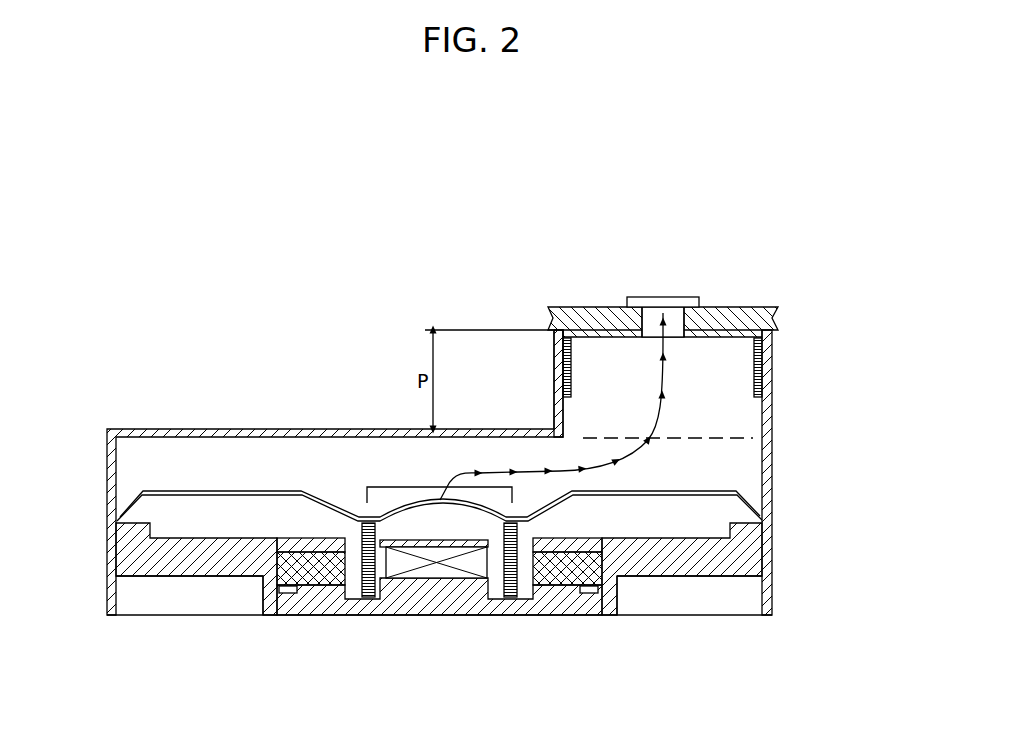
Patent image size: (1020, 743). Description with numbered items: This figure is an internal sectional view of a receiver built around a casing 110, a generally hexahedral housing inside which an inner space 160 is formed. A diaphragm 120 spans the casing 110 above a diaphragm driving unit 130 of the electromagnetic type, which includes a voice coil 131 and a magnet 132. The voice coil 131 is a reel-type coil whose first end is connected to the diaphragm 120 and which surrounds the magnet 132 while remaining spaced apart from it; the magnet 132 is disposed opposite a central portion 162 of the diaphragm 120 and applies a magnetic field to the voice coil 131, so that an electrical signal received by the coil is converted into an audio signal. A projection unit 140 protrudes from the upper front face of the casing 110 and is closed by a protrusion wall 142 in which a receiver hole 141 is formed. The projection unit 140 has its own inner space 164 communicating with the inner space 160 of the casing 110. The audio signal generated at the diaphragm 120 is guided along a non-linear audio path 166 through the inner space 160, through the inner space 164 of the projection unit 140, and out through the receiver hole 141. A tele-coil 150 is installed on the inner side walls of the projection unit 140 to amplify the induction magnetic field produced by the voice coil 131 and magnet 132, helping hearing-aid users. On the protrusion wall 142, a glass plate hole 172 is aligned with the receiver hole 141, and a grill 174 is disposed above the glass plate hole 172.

The casing 110 is at (233, 430).
The diaphragm 120 is at (660, 500).
The diaphragm driving unit 130 is at (439, 640).
The voice coil 131 is at (368, 580).
The magnet 132 is at (463, 567).
The projection unit 140 is at (556, 383).
The receiver hole 141 is at (676, 332).
The protrusion wall 142 is at (745, 311).
The tele-coil 150 is at (565, 340).
The inner space 160 is at (745, 476).
The central portion 162 is at (447, 487).
The inner space 164 is at (745, 408).
The audio path 166 is at (748, 438).
The glass plate hole 172 is at (655, 318).
The grill 174 is at (672, 300).